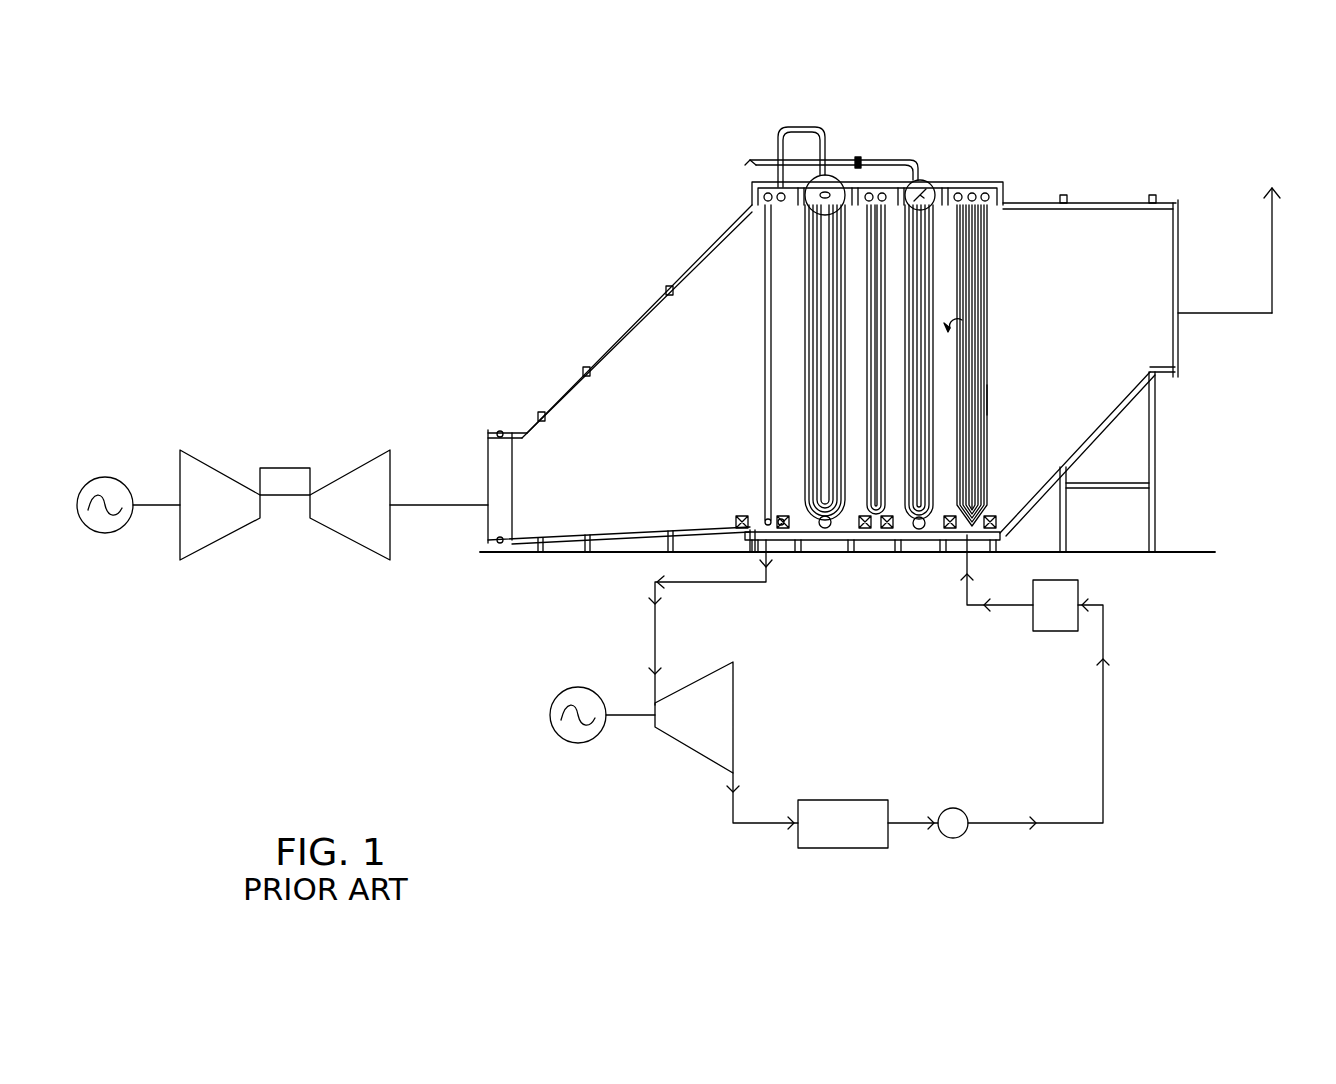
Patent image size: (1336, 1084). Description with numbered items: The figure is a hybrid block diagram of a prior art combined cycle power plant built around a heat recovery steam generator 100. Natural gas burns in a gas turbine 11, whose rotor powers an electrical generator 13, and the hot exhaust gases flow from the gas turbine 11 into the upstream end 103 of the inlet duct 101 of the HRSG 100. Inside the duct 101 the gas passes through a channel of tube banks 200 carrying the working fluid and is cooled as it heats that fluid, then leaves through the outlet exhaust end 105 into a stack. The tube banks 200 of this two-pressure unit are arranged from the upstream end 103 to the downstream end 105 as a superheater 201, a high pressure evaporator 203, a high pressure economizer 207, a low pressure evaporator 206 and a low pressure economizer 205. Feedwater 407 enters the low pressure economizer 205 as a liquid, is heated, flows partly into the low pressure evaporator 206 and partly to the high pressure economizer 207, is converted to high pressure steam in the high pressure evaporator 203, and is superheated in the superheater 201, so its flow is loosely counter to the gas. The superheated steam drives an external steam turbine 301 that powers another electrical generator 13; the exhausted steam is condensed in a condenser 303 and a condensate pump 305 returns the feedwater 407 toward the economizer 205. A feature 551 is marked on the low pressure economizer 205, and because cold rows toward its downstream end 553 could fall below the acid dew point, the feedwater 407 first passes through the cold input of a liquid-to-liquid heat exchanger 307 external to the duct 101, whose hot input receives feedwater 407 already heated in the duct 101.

The heat recovery steam generator 100 is at (541, 326).
The inlet duct 101 is at (710, 252).
The upstream end 103 is at (497, 488).
The outlet exhaust end 105 is at (1178, 275).
The gas turbine 11 is at (345, 470).
The electrical generator 13 is at (108, 533).
The tube banks 200 is at (997, 133).
The superheater 201 is at (765, 352).
The high pressure evaporator 203 is at (803, 405).
The low pressure economizer 205 is at (987, 262).
The low pressure evaporator 206 is at (933, 238).
The high pressure economizer 207 is at (884, 237).
The tube inlet 551 is at (962, 325).
The downstream end of the low pressure economizer 553 is at (987, 400).
The steam turbine 301 is at (686, 748).
The condenser 303 is at (855, 850).
The condensate pump 305 is at (958, 838).
The liquid-to-liquid heat exchanger 307 is at (1078, 583).
The feedwater 407 is at (1103, 722).